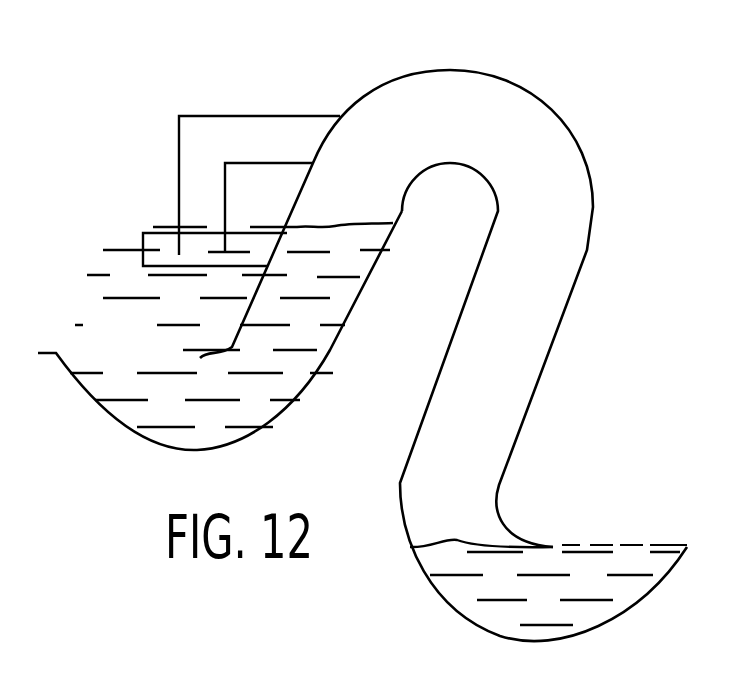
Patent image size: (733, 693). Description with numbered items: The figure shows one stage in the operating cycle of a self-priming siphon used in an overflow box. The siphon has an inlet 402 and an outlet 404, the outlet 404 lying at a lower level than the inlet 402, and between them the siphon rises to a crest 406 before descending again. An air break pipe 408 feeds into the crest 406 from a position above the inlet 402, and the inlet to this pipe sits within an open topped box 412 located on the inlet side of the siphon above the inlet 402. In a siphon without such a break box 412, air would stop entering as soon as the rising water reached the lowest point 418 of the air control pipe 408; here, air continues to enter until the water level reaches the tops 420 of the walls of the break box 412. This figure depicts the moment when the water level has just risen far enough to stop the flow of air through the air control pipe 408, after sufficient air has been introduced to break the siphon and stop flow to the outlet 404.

The inlet 402 is at (87, 358).
The outlet 404 is at (660, 545).
The crest 406 is at (452, 163).
The air break pipe 408 is at (227, 115).
The open topped box 412 is at (153, 242).
The lowest point of the air control pipe 418 is at (225, 249).
The tops of the walls of the break box 420 is at (153, 230).